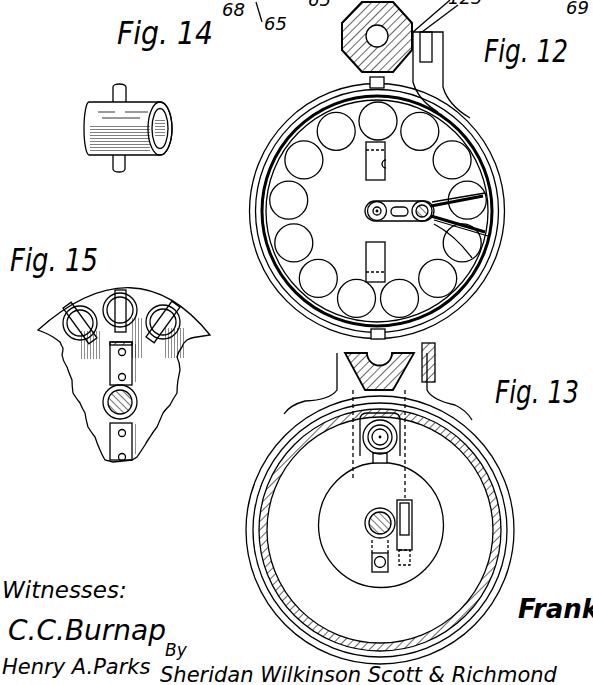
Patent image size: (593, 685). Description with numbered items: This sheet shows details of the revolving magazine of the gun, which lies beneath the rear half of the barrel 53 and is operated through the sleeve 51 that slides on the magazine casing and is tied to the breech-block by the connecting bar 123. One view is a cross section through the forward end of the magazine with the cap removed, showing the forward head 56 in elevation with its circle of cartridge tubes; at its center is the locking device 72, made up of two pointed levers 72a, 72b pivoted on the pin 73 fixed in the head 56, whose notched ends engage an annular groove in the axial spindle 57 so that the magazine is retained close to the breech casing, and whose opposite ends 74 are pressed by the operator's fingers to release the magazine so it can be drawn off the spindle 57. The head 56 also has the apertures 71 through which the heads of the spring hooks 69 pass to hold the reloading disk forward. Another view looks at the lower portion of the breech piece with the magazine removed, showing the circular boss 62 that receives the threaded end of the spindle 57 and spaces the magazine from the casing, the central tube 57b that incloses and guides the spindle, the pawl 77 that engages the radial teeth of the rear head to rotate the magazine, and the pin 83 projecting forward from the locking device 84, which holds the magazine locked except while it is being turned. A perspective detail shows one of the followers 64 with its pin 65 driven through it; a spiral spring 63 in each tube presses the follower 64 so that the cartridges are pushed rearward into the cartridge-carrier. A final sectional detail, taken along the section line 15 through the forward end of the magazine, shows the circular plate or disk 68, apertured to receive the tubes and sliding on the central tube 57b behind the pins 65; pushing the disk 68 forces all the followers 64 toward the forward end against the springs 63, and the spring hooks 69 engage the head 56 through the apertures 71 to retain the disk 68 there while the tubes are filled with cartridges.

In FIG. 12, the line 15, 15 of Fig. 11 15 is at (445, 212).
In FIG. 12, the sleeve 51 is at (288, 290).
In FIG. 12, the barrel 53 is at (342, 30).
In FIG. 13, the barrel 53 is at (352, 362).
In FIG. 12, the forward head of the magazine 56 is at (275, 222).
In FIG. 15, the axial spindle 57 is at (108, 419).
In FIG. 13, the central tube 57b is at (365, 519).
In FIG. 15, the central tube 57b is at (107, 402).
In FIG. 13, the circular boss 62 is at (432, 509).
In FIG. 15, the spiral spring 63 is at (113, 292).
In FIG. 14, the follower 64 is at (136, 108).
In FIG. 15, the follower 64 is at (128, 306).
In FIG. 14, the pin 65 is at (113, 88).
In FIG. 15, the pin 65 is at (125, 296).
In FIG. 15, the circular plate or disk 68 is at (193, 325).
In FIG. 12, the spring hooks 69 is at (385, 148).
In FIG. 15, the spring hooks 69 is at (110, 343).
In FIG. 12, the apertures 71 is at (386, 165).
In FIG. 12, the locking device 72 is at (372, 222).
In FIG. 12, the pointed lever 72a is at (402, 200).
In FIG. 12, the pointed lever 72b is at (402, 221).
In FIG. 12, the pin 73 is at (482, 254).
In FIG. 12, the ends of the retaining device 74 is at (470, 200).
In FIG. 13, the pawl 77 is at (412, 543).
In FIG. 13, the pin 83 is at (390, 568).
In FIG. 13, the locking device 84 is at (378, 573).
In FIG. 12, the connecting bar 123 is at (470, 27).
In FIG. 13, the connecting bar 123 is at (437, 356).